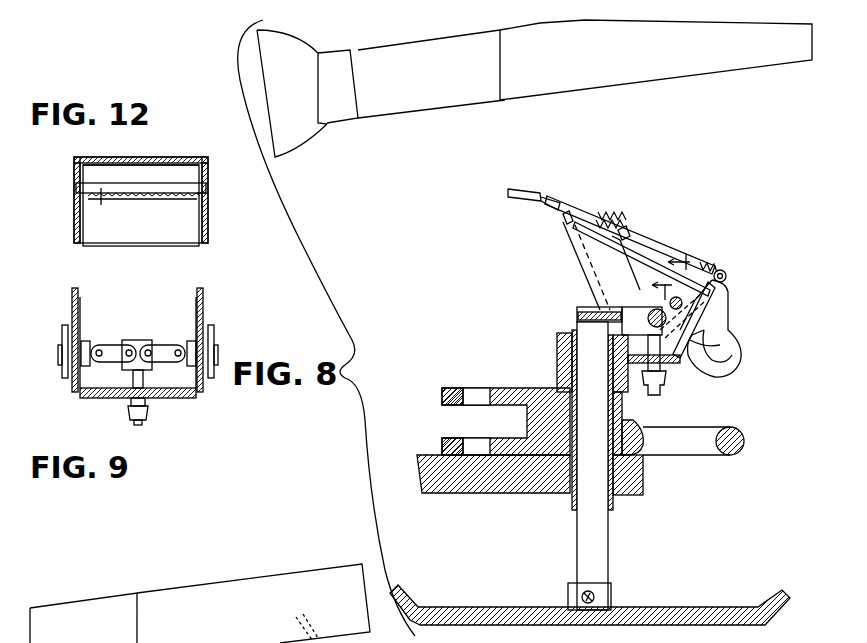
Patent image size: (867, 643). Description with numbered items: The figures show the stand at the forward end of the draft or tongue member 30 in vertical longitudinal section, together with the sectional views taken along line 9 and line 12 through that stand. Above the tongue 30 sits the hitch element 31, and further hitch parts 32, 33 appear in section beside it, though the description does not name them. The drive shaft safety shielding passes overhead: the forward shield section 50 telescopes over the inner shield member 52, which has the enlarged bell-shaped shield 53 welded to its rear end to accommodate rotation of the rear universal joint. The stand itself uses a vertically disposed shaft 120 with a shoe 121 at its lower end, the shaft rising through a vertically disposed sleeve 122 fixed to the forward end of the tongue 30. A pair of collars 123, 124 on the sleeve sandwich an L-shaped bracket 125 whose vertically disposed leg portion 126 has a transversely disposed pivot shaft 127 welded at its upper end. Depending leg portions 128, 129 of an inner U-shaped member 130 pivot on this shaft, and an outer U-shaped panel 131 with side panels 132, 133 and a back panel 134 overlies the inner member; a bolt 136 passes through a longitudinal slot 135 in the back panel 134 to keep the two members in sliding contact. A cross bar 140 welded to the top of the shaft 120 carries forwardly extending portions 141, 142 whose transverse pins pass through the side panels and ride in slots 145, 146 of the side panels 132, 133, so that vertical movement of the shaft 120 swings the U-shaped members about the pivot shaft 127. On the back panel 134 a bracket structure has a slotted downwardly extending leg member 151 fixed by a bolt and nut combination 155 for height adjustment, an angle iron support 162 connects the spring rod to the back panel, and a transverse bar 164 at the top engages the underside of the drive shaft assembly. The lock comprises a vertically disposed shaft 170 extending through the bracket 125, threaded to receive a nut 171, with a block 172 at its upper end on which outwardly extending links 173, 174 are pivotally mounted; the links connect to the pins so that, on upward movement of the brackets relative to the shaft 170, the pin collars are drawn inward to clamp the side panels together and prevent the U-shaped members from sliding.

In FIG. 8, the section line 9— 9 is at (665, 292).
In FIG. 8, the section line 12— 12 is at (686, 265).
In FIG. 8, the draft or tongue member 30 is at (434, 493).
In FIG. 8, the hitch element 31 is at (515, 392).
In FIG. 8, the rod 32 is at (742, 436).
In FIG. 8, the clamp piece 33 is at (452, 392).
In FIG. 8, the forward shield section 50 is at (645, 76).
In FIG. 8, the inner shield member 52 is at (455, 100).
In FIG. 8, the bell-shaped shield 53 is at (302, 144).
In FIG. 8, the vertically disposed shaft 120 is at (606, 560).
In FIG. 8, the shoe 121 is at (668, 246).
In FIG. 8, the vertically disposed sleeve 122 is at (643, 477).
In FIG. 8, the collar 123 is at (560, 375).
In FIG. 8, the collar 124 is at (572, 340).
In FIG. 9, the L-shaped bracket 125 is at (180, 397).
In FIG. 8, the L-shaped bracket 125 is at (557, 350).
In FIG. 12, the vertically disposed leg portion 126 is at (150, 236).
In FIG. 8, the vertically disposed leg portion 126 is at (700, 322).
In FIG. 12, the transversely disposed pivot shaft 127 is at (101, 207).
In FIG. 8, the transversely disposed pivot shaft 127 is at (705, 304).
In FIG. 12, the depending leg portion 128 is at (76, 172).
In FIG. 8, the depending leg portion 128 is at (595, 266).
In FIG. 12, the depending leg portion 129 is at (205, 168).
In FIG. 12, the inner U-shaped member 130 is at (146, 175).
In FIG. 8, the inner U-shaped member 130 is at (572, 253).
In FIG. 12, the outer U-shaped panel 131 is at (193, 155).
In FIG. 12, the side panel 132 is at (74, 197).
In FIG. 8, the side panel 132 is at (735, 375).
In FIG. 12, the side panel 133 is at (207, 197).
In FIG. 12, the back panel 134 is at (178, 148).
In FIG. 8, the back panel 134 is at (725, 282).
In FIG. 12, the longitudinal slot 135 is at (140, 157).
In FIG. 8, the longitudinal slot 135 is at (647, 248).
In FIG. 8, the bolt 136 is at (627, 230).
In FIG. 8, the cross bar 140 is at (585, 307).
In FIG. 9, the forwardly extending portion 141 is at (82, 340).
In FIG. 8, the forwardly extending portion 141 is at (612, 300).
In FIG. 9, the forwardly extending portion 142 is at (190, 340).
In FIG. 12, the slot 145 is at (74, 213).
In FIG. 8, the slot 145 is at (725, 360).
In FIG. 12, the slot 146 is at (208, 214).
In FIG. 8, the downwardly extending leg member 151 is at (558, 207).
In FIG. 8, the bolt and nut combination 155 is at (565, 220).
In FIG. 8, the angle iron support 162 is at (613, 212).
In FIG. 8, the transverse bar 164 is at (545, 194).
In FIG. 9, the vertically disposed shaft 170 is at (143, 380).
In FIG. 8, the vertically disposed shaft 170 is at (635, 428).
In FIG. 9, the nut 171 is at (146, 422).
In FIG. 8, the nut 171 is at (660, 385).
In FIG. 9, the block 172 is at (127, 370).
In FIG. 8, the block 172 is at (685, 342).
In FIG. 9, the link 173 is at (113, 346).
In FIG. 8, the link 173 is at (650, 312).
In FIG. 9, the link 174 is at (162, 346).